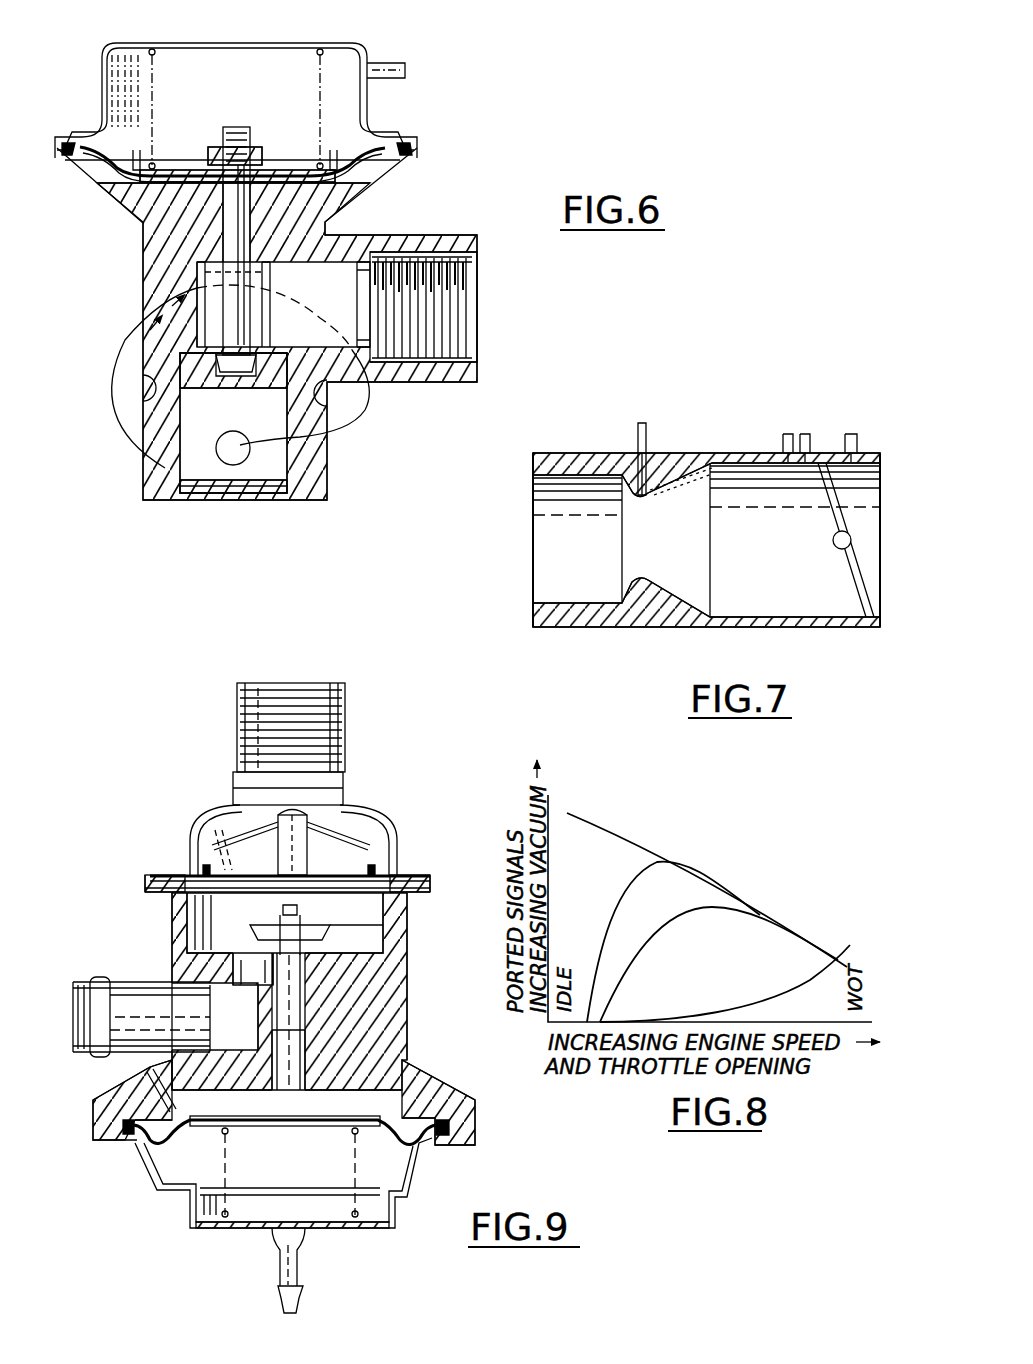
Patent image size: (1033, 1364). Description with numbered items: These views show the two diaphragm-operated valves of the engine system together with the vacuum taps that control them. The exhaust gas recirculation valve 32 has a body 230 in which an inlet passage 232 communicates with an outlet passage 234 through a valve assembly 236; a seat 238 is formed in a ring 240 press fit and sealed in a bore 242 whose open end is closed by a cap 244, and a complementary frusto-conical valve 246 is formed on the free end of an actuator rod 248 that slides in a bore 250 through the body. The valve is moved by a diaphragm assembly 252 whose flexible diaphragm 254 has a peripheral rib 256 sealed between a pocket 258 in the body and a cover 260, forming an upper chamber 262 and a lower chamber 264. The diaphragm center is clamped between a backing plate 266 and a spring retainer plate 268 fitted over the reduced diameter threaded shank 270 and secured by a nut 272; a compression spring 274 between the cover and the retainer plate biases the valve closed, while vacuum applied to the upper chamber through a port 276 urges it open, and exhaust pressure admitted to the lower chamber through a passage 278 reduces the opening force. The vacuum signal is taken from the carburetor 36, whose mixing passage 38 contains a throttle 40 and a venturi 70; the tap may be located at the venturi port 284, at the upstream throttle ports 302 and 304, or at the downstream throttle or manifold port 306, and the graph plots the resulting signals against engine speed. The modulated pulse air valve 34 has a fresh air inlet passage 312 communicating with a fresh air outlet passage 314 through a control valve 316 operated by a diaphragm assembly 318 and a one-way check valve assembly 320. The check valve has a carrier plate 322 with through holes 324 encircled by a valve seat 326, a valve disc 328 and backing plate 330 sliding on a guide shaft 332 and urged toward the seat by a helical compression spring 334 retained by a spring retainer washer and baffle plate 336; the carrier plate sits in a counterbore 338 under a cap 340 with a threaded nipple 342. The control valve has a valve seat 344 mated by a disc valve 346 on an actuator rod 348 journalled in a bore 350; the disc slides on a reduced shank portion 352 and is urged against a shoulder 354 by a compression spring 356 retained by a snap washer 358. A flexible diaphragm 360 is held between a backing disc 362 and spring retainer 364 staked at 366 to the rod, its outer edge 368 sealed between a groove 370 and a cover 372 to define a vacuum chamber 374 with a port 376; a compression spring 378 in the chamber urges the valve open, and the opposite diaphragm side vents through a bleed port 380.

In FIG. 6, the exhaust gas recirculation valve 32 is at (112, 340).
In FIG. 6, the body 230 is at (143, 286).
In FIG. 6, the inlet passage 232 is at (465, 318).
In FIG. 6, the outlet passage 234 is at (176, 488).
In FIG. 6, the valve assembly 236 is at (176, 371).
In FIG. 6, the seat 238 is at (336, 434).
In FIG. 6, the ring 240 is at (222, 452).
In FIG. 6, the bore 242 is at (276, 457).
In FIG. 6, the cap 244 is at (230, 486).
In FIG. 6, the frusto-conical valve 246 is at (246, 350).
In FIG. 6, the actuator rod 248 is at (205, 268).
In FIG. 6, the bore 250 is at (372, 200).
In FIG. 6, the diaphragm assembly 252 is at (378, 93).
In FIG. 6, the flexible diaphragm 254 is at (368, 136).
In FIG. 6, the peripheral rib 256 is at (80, 108).
In FIG. 6, the pocket 258 is at (94, 172).
In FIG. 6, the cover 260 is at (258, 45).
In FIG. 6, the upper chamber 262 is at (180, 58).
In FIG. 6, the lower chamber 264 is at (378, 192).
In FIG. 6, the backing plate 266 is at (128, 226).
In FIG. 6, the spring retainer plate 268 is at (237, 150).
In FIG. 6, the reduced diameter threaded shank 270 is at (240, 128).
In FIG. 6, the nut 272 is at (212, 157).
In FIG. 6, the compression spring 274 is at (153, 88).
In FIG. 6, the port 276 is at (380, 64).
In FIG. 6, the passage 278 is at (334, 224).
In FIG. 7, the carburetor 36 is at (580, 438).
In FIG. 8, the carburetor 36 is at (628, 836).
In FIG. 7, the carburetor mixing passage 38 is at (560, 545).
In FIG. 7, the throttle 40 is at (848, 513).
In FIG. 7, the venturi 70 is at (634, 582).
In FIG. 7, the venturi port 284 is at (648, 423).
In FIG. 8, the venturi port 284 is at (839, 935).
In FIG. 7, the upstream throttle port 302 is at (786, 434).
In FIG. 8, the upstream throttle port 302 is at (657, 932).
In FIG. 7, the upstream throttle port 304 is at (806, 434).
In FIG. 8, the upstream throttle port 304 is at (628, 883).
In FIG. 7, the downstream throttle or manifold port 306 is at (853, 435).
In FIG. 9, the modulated pulse air valve 34 is at (122, 812).
In FIG. 9, the fresh air inlet passage 312 is at (97, 976).
In FIG. 9, the fresh air outlet passage 314 is at (300, 700).
In FIG. 9, the control valve 316 is at (234, 915).
In FIG. 9, the diaphragm assembly 318 is at (208, 1234).
In FIG. 9, the one-way check valve assembly 320 is at (370, 910).
In FIG. 9, the carrier plate 322 is at (396, 875).
In FIG. 9, the through holes 324 is at (412, 898).
In FIG. 9, the valve seat 326 is at (207, 832).
In FIG. 9, the valve disc 328 is at (362, 832).
In FIG. 9, the backing plate 330 is at (215, 830).
In FIG. 9, the guide shaft 332 is at (302, 822).
In FIG. 9, the helical compression spring 334 is at (333, 856).
In FIG. 9, the spring retainer washer and baffle plate 336 is at (217, 840).
In FIG. 9, the counterbore 338 is at (173, 875).
In FIG. 9, the cap 340 is at (184, 856).
In FIG. 9, the threaded nipple 342 is at (233, 686).
In FIG. 9, the valve seat 344 is at (275, 990).
In FIG. 9, the disc valve 346 is at (252, 927).
In FIG. 9, the actuator rod 348 is at (306, 1007).
In FIG. 9, the bore 350 is at (307, 1038).
In FIG. 9, the reduced shank portion 352 is at (280, 924).
In FIG. 9, the shoulder 354 is at (366, 950).
In FIG. 9, the compression spring 356 is at (380, 926).
In FIG. 9, the snap washer 358 is at (292, 921).
In FIG. 9, the flexible diaphragm 360 is at (424, 1167).
In FIG. 9, the backing disc 362 is at (403, 1064).
In FIG. 9, the spring retainer 364 is at (243, 1130).
In FIG. 9, the staking 366 is at (285, 1124).
In FIG. 9, the outer edge 368 is at (138, 1142).
In FIG. 9, the groove 370 is at (442, 1135).
In FIG. 9, the cover 372 is at (392, 1230).
In FIG. 9, the vacuum chamber 374 is at (318, 1203).
In FIG. 9, the port 376 is at (276, 1291).
In FIG. 9, the compression spring 378 is at (226, 1158).
In FIG. 9, the bleed port 380 is at (150, 1080).